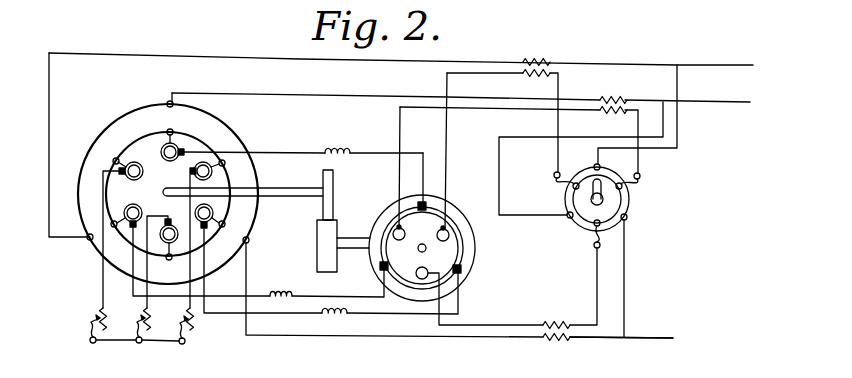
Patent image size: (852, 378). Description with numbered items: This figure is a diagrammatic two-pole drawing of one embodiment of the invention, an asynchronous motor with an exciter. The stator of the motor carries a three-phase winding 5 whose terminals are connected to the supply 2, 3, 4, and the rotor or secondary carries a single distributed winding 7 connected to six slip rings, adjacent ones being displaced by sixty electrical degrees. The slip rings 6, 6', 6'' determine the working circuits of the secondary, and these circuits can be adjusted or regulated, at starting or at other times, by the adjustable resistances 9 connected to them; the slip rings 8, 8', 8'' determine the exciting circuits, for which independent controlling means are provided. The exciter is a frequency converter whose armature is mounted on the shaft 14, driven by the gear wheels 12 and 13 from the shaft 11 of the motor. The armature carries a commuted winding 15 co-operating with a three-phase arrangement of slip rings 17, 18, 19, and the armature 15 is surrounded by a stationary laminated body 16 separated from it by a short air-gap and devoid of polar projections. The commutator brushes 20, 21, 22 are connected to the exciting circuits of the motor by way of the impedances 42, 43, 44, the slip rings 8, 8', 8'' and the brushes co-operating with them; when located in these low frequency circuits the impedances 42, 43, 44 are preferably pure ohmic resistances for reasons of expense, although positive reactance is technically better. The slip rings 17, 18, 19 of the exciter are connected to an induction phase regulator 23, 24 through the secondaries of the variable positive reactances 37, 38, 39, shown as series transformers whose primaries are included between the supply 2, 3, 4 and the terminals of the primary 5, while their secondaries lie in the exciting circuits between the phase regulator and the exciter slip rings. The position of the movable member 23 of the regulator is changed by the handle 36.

The supply 2 is at (408, 64).
The supply 3 is at (469, 102).
The supply 4 is at (630, 340).
The three-phase winding 5 is at (140, 106).
The slip ring 6 is at (214, 167).
The slip ring 6' is at (128, 152).
The slip ring 6'' is at (169, 249).
The distributed winding 7 is at (200, 140).
The slip ring 8 is at (166, 145).
The slip ring 8' is at (126, 209).
The slip ring 8'' is at (222, 215).
The adjustable resistances 9 is at (153, 328).
The shaft 11 is at (274, 191).
The gear wheel 12 is at (333, 186).
The gear wheel 13 is at (317, 246).
The shaft 14 is at (344, 238).
The commuted winding 15 is at (455, 251).
The stationary laminated body 16 is at (468, 218).
The slip ring 17 is at (433, 228).
The slip ring 18 is at (395, 242).
The slip ring 19 is at (412, 269).
The commutator brush 20 is at (380, 270).
The commutator brush 21 is at (430, 203).
The commutator brush 22 is at (463, 270).
The movable member 23 is at (590, 214).
The induction phase regulator 24 is at (565, 199).
The handle 36 is at (605, 186).
The variable positive reactance 37 is at (541, 57).
The variable positive reactance 38 is at (606, 96).
The variable positive reactance 39 is at (559, 320).
The impedance 42 is at (339, 139).
The impedance 43 is at (277, 283).
The impedance 44 is at (337, 321).